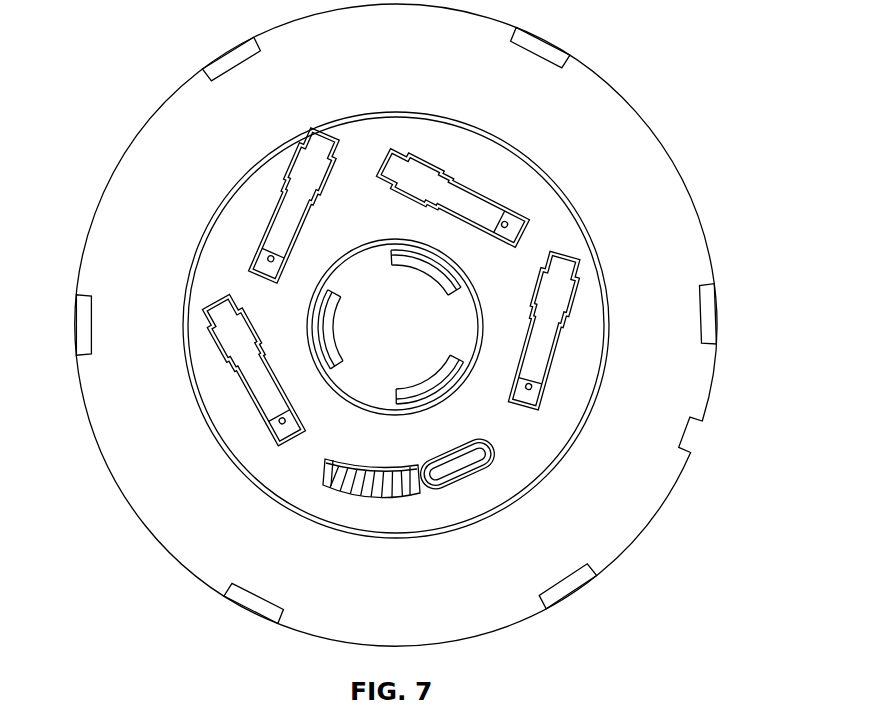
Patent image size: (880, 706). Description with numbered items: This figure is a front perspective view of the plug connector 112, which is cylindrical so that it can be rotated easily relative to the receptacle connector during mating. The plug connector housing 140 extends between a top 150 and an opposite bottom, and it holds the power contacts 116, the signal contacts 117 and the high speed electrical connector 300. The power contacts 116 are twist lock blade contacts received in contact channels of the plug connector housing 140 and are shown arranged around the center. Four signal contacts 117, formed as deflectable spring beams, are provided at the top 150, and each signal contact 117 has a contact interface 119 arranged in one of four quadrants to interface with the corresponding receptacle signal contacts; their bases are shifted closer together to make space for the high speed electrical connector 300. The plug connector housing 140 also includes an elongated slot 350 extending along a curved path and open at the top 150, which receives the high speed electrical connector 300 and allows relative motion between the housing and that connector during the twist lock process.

The plug connector 112 is at (656, 69).
The plug connector housing 140 is at (150, 478).
The top 150 is at (213, 377).
The power contacts 116 is at (456, 279).
The signal contacts 117 is at (555, 301).
The contact interface 119 is at (532, 384).
The high speed electrical connector 300 is at (473, 497).
The elongated slot 350 is at (413, 507).